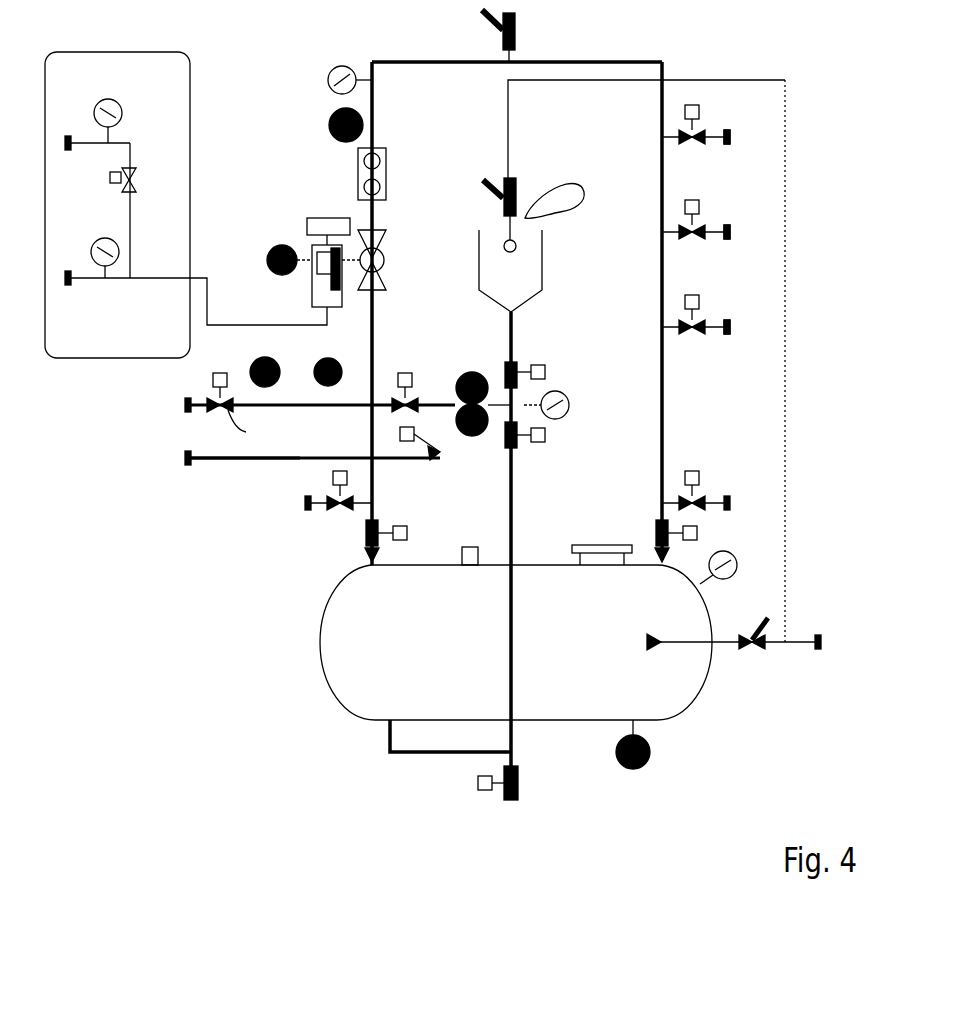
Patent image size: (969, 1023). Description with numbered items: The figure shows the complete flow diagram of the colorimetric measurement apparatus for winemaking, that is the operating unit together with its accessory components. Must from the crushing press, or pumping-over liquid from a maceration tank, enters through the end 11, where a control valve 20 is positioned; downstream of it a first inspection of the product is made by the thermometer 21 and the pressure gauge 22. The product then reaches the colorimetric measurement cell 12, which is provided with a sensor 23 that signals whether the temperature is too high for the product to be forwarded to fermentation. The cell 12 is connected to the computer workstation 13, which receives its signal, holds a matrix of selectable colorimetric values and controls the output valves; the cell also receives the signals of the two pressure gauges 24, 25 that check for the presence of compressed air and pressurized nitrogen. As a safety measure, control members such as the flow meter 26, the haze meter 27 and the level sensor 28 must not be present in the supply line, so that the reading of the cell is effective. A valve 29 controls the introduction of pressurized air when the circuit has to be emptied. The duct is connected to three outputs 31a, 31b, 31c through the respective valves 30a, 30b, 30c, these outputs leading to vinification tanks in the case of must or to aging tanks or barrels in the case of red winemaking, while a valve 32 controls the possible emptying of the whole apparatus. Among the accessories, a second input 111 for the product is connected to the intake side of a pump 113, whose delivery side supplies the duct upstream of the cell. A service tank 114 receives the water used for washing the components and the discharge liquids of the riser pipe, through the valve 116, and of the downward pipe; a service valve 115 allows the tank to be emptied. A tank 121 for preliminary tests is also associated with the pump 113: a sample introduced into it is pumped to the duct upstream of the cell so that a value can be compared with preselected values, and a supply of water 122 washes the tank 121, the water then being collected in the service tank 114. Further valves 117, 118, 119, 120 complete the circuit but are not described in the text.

The end 11 is at (183, 402).
The colorimetric measurement cell 12 is at (392, 262).
The computer workstation 13 is at (310, 217).
The control valve 20 is at (312, 450).
The thermometer 21 is at (292, 345).
The pressure gauge 22 is at (338, 346).
The sensor 23 is at (268, 251).
The pressure gauge 24 is at (147, 83).
The pressure gauge 25 is at (107, 242).
The flow meter 26 is at (392, 180).
The haze meter 27 is at (330, 126).
The level sensor 28 is at (331, 73).
The valve 29 is at (520, 25).
The valve 30a is at (699, 105).
The valve 30b is at (699, 200).
The valve 30c is at (699, 296).
The output 31a is at (730, 140).
The output 31b is at (730, 235).
The output 31c is at (730, 330).
The valve 32 is at (737, 567).
The second input 111 is at (182, 455).
The pump 113 is at (478, 352).
The service tank 114 is at (323, 670).
The service valve 115 is at (519, 790).
The valve 116 is at (445, 490).
The valve 117 is at (334, 516).
The valve 118 is at (753, 650).
The valve 119 is at (519, 362).
The valve 120 is at (533, 446).
The tank 121 is at (542, 276).
The supply of water 122 is at (578, 128).